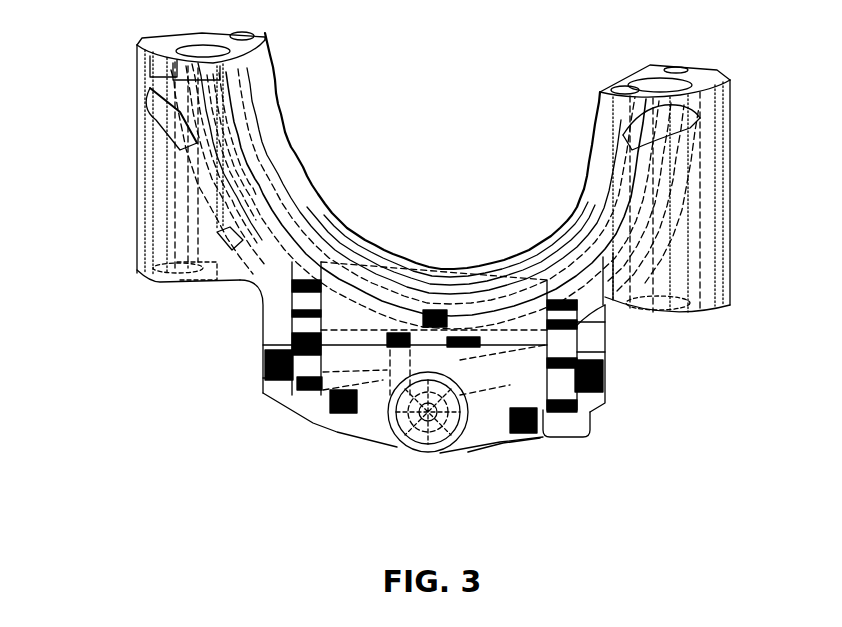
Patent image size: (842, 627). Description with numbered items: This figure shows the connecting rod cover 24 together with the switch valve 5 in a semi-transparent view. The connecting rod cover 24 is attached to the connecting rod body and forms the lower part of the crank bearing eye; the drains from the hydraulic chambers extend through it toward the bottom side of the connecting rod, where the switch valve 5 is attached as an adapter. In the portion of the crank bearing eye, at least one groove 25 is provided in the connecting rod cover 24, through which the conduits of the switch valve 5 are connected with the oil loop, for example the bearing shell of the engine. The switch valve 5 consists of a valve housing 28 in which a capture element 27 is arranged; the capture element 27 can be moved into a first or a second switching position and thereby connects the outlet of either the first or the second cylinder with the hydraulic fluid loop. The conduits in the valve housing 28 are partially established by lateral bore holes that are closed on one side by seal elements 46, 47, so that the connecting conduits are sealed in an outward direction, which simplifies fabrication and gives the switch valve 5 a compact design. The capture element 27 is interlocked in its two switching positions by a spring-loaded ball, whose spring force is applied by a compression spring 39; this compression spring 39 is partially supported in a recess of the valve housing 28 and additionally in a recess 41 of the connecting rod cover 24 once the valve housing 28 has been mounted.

The connecting rod cover 24 is at (130, 217).
The groove 25 is at (338, 247).
The recess 41 is at (428, 290).
The compression spring 39 is at (458, 310).
The switch valve 5 is at (327, 447).
The capture element 27 is at (397, 447).
The valve housing 28 is at (503, 443).
The seal element 47 is at (260, 365).
The seal element 46 is at (312, 430).